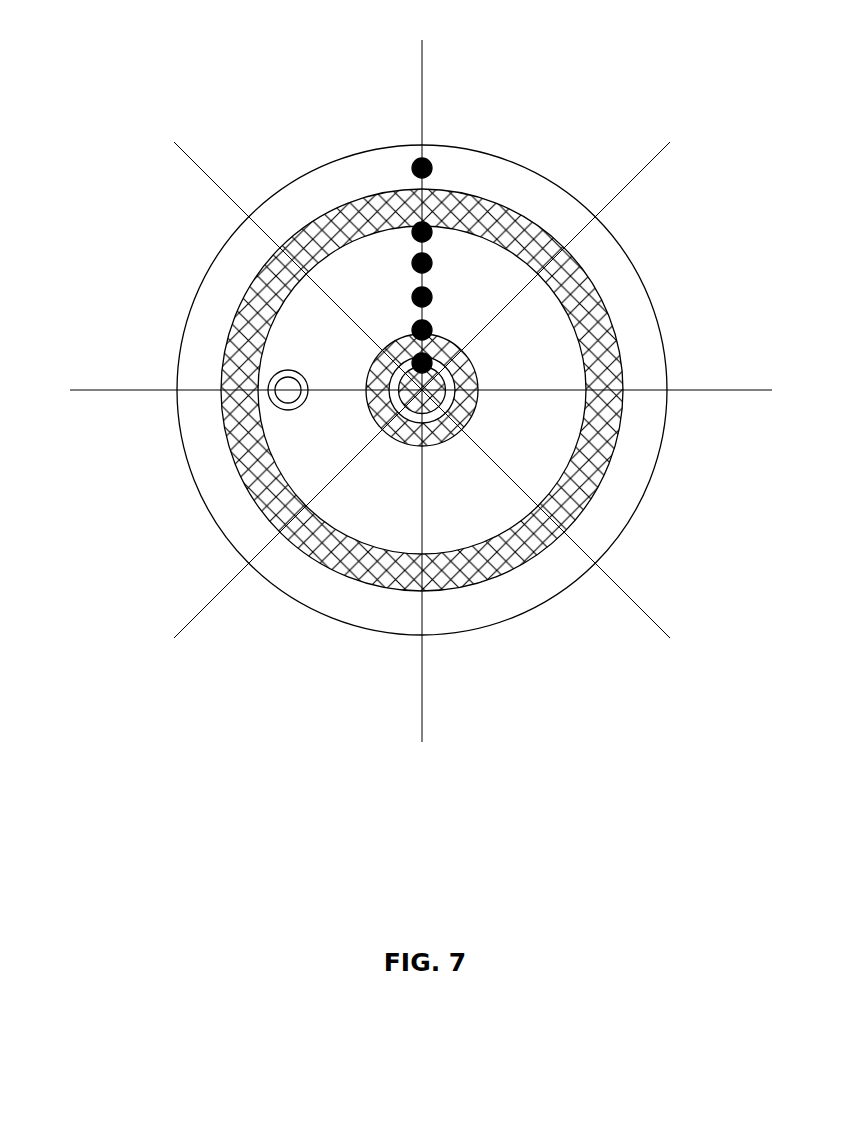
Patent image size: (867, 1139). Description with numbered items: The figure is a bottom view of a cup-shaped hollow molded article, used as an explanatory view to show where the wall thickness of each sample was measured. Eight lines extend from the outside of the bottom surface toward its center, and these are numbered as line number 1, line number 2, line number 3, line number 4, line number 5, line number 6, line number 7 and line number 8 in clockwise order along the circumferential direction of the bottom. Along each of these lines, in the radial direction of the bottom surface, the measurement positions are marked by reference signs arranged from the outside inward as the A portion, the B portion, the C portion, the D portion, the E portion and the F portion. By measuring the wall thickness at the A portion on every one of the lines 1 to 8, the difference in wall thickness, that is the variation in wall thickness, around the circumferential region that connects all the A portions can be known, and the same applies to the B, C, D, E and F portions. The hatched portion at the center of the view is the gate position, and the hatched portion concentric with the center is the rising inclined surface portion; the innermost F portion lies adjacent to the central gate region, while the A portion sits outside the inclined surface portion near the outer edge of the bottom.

The line number 1 is at (422, 196).
The line number 2 is at (561, 251).
The line number 3 is at (616, 390).
The line number 4 is at (561, 529).
The line number 5 is at (422, 585).
The line number 6 is at (282, 529).
The line number 7 is at (227, 391).
The line number 8 is at (282, 251).
The A portion A is at (434, 168).
The B portion B is at (411, 236).
The C portion C is at (434, 263).
The D portion D is at (410, 297).
The E portion E is at (434, 327).
The F portion F is at (410, 362).